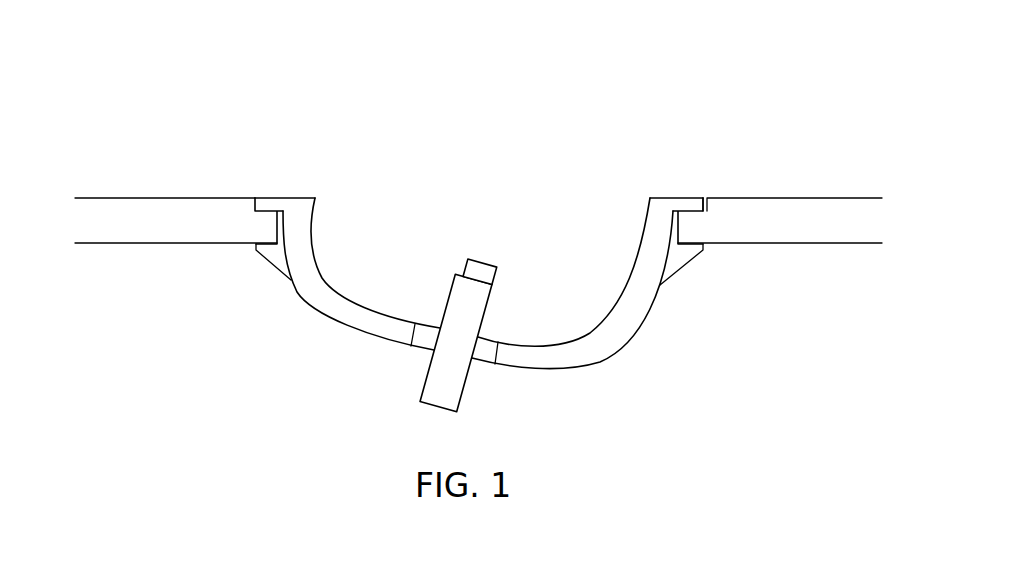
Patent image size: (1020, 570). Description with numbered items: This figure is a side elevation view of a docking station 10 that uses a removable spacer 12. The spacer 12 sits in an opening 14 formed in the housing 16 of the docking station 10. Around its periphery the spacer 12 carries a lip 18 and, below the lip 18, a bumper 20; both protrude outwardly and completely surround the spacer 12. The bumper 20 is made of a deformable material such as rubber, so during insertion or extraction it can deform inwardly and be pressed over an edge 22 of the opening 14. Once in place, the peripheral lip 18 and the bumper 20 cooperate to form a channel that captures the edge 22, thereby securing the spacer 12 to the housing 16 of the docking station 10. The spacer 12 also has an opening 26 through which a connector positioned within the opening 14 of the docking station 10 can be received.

The docking station 10 is at (630, 62).
The removable spacer 12 is at (292, 198).
The opening 14 is at (248, 198).
The housing 16 is at (147, 198).
The lip 18 is at (677, 198).
The bumper 20 is at (677, 273).
The edge 22 is at (257, 245).
The opening 26 is at (419, 233).